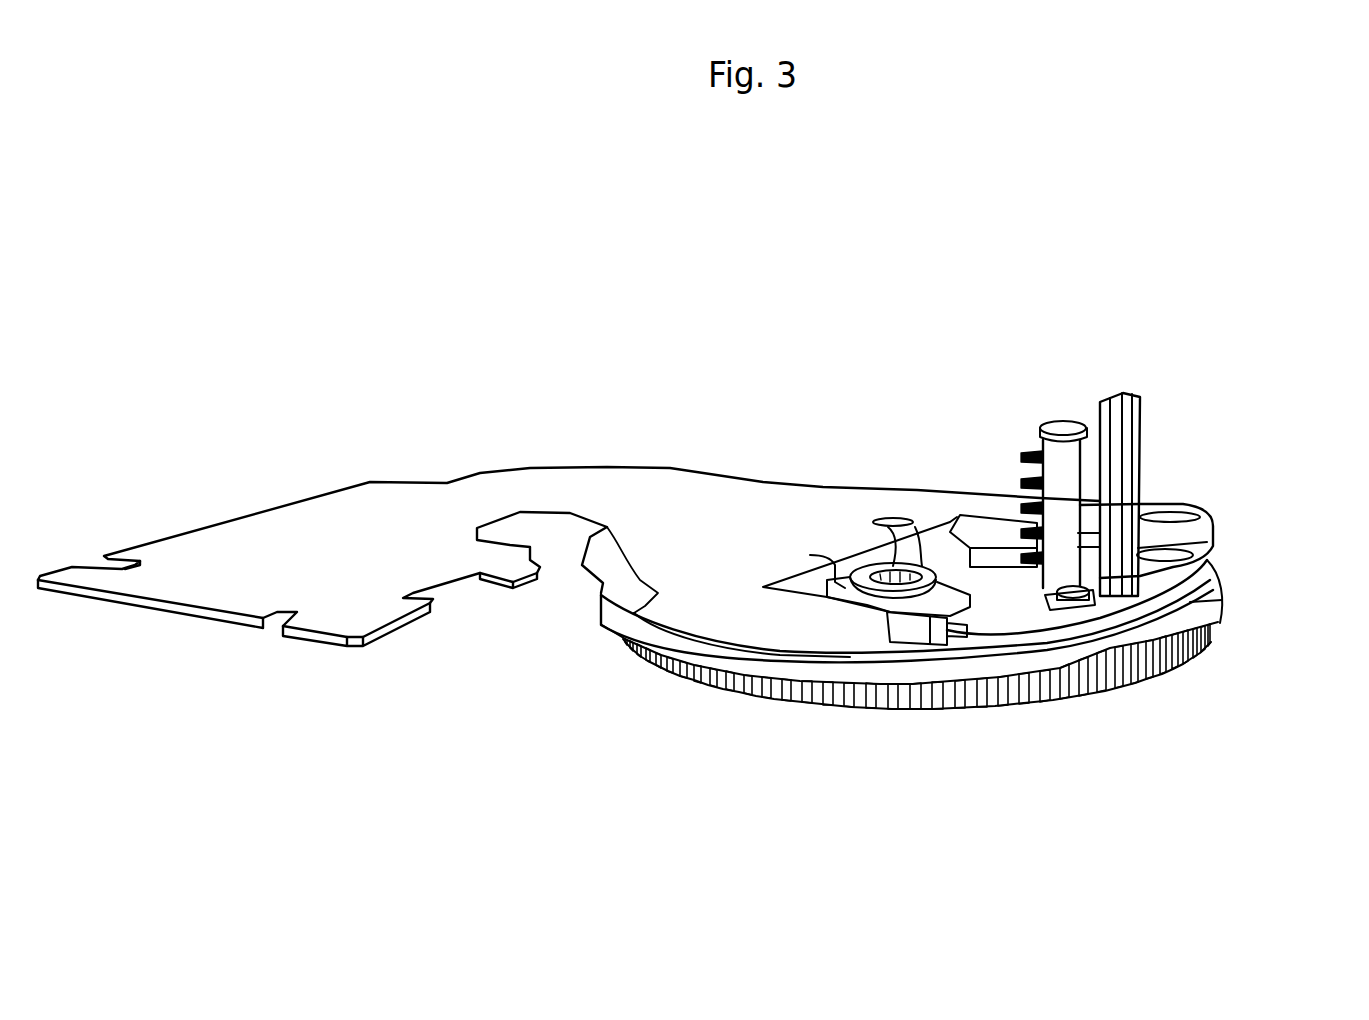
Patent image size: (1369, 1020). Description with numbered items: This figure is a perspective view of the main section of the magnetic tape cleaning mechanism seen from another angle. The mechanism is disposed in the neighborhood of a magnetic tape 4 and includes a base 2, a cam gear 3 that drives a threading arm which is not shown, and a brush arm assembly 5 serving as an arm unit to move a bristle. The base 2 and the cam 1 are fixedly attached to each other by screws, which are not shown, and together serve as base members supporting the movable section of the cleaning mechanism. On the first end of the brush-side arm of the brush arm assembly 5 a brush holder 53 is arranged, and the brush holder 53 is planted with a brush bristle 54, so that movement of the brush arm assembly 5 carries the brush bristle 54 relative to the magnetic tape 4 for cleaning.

The cam 1 is at (1190, 593).
The base 2 is at (263, 532).
The cam gear 3 is at (1210, 617).
The magnetic tape 4 is at (1108, 413).
The brush arm assembly 5 is at (967, 625).
The brush holder 53 is at (1060, 423).
The brush bristle 54 is at (1020, 455).